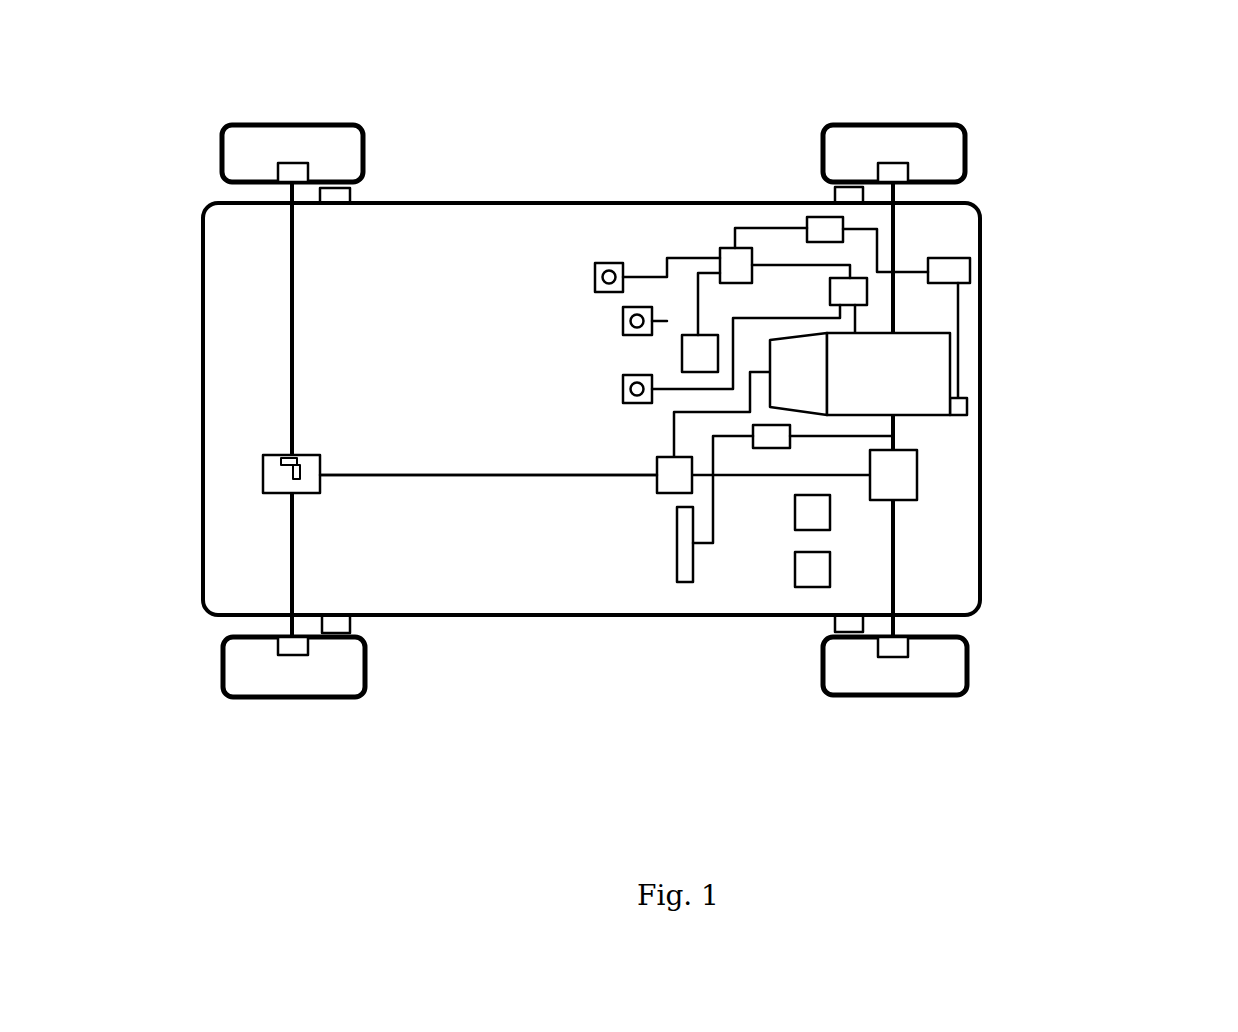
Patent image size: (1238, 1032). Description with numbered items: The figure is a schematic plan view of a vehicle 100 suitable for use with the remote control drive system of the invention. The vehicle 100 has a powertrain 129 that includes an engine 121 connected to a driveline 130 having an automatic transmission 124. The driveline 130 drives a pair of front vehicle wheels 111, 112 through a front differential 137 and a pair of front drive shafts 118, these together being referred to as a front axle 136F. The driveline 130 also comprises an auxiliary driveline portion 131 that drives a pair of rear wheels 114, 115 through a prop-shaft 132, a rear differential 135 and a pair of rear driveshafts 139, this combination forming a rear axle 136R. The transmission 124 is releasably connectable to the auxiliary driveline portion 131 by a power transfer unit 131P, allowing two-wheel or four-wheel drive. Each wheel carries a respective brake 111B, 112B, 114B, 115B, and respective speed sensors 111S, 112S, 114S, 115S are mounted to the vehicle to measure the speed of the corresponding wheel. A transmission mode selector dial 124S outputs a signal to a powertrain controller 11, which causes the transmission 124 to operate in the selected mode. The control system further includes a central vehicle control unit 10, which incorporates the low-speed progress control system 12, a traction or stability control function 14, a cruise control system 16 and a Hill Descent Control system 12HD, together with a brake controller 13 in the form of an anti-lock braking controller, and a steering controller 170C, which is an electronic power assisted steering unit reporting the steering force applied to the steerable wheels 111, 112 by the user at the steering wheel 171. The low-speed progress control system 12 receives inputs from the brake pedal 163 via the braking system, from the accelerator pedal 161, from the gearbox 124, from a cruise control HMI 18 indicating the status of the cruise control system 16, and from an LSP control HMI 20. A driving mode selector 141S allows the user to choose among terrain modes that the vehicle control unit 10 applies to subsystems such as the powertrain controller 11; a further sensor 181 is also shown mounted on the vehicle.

The vehicle 100 is at (1118, 143).
The vehicle control unit 10 is at (704, 159).
The low-speed progress control system 12 is at (704, 159).
The controller 14 is at (704, 159).
The cruise control system 16 is at (704, 159).
The Hill Descent Control system 12HD is at (735, 250).
The powertrain controller 11 is at (868, 296).
The brake controller 13 is at (815, 227).
The cruise control HMI 18 is at (675, 242).
The LSP control HMI 20 is at (690, 345).
The front vehicle wheel 111 is at (945, 145).
The brake 111B is at (900, 170).
The speed sensor 111S is at (850, 192).
The front vehicle wheel 112 is at (945, 672).
The brake 112B is at (900, 650).
The speed sensor 112S is at (850, 625).
The rear wheel 114 is at (262, 150).
The brake 114B is at (285, 172).
The speed sensor 114S is at (335, 203).
The rear wheel 115 is at (250, 675).
The brake 115B is at (280, 647).
The speed sensor 115S is at (335, 628).
The front drive shaft 118 is at (893, 247).
The engine 121 is at (920, 362).
The automatic transmission 124 is at (790, 355).
The transmission mode selector dial 124S is at (623, 313).
The powertrain 129 is at (1112, 405).
The driveline 130 is at (1082, 593).
The auxiliary driveline portion 131 is at (485, 657).
The power transfer unit 131P is at (668, 484).
The prop-shaft 132 is at (418, 477).
The rear differential 135 is at (268, 478).
The front axle 136F is at (925, 227).
The rear axle 136R is at (282, 360).
The front differential 137 is at (907, 475).
The rear driveshaft 139 is at (292, 298).
The driving mode selector 141S is at (623, 385).
The accelerator pedal 161 is at (810, 578).
The brake pedal 163 is at (808, 512).
The steering controller 170C is at (770, 442).
The steering wheel 171 is at (685, 578).
The sensor 181 is at (595, 262).